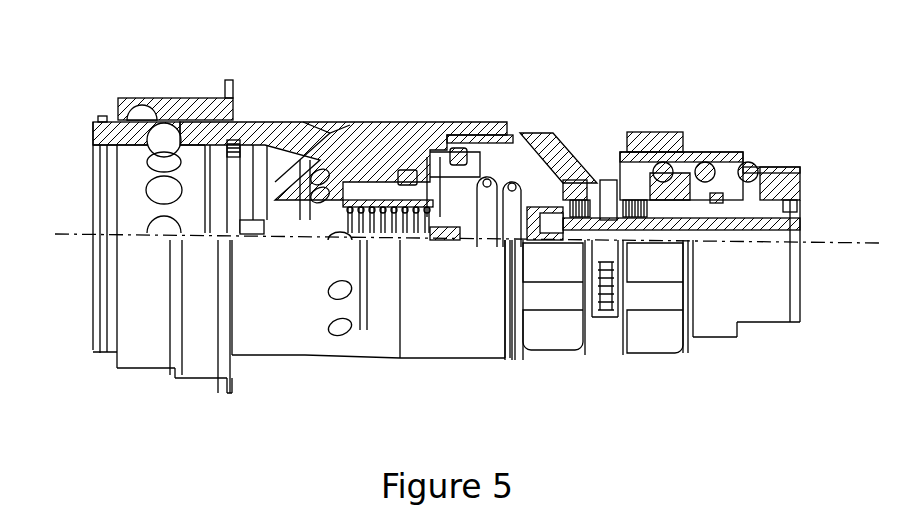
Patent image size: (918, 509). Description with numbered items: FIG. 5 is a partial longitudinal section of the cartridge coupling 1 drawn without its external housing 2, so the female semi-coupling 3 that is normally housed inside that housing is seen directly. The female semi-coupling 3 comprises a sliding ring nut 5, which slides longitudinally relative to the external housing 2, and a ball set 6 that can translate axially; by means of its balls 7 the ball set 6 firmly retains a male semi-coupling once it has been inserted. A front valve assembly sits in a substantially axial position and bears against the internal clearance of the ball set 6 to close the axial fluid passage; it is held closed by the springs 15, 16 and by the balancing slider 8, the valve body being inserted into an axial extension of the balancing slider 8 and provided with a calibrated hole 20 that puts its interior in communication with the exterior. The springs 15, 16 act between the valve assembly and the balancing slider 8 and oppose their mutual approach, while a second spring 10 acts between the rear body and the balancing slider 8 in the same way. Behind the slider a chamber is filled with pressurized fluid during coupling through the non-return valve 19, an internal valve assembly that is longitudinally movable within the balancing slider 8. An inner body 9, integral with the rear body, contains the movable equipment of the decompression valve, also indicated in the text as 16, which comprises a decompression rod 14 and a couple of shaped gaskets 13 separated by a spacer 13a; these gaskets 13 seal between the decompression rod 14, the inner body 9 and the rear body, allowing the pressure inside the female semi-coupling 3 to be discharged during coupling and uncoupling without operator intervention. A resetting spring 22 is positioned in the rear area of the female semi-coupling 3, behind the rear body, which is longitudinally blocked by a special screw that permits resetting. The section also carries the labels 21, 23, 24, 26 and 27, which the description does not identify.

The cartridge coupling 1 is at (213, 118).
The external housing 2 is at (718, 180).
The female semi-coupling 3 is at (553, 330).
The sliding ring nut 5 is at (163, 110).
The ball set 6 is at (267, 358).
The balls 7 is at (158, 145).
The balancing slider 8 is at (440, 168).
The inner body 9 is at (655, 335).
The second spring 10 is at (490, 190).
The shaped gaskets 13 is at (688, 200).
The spacer 13a is at (638, 198).
The decompression rod 14 is at (605, 192).
The spring 15 is at (370, 205).
The spring 16 is at (330, 202).
The non-return valve 19 is at (97, 115).
The calibrated hole 20 is at (266, 198).
The spring seat 21 is at (443, 240).
The resetting spring 22 is at (410, 168).
The retaining ring 23 is at (468, 142).
The screw 24 is at (233, 135).
The washer 26 is at (800, 205).
The seal 27 is at (720, 200).